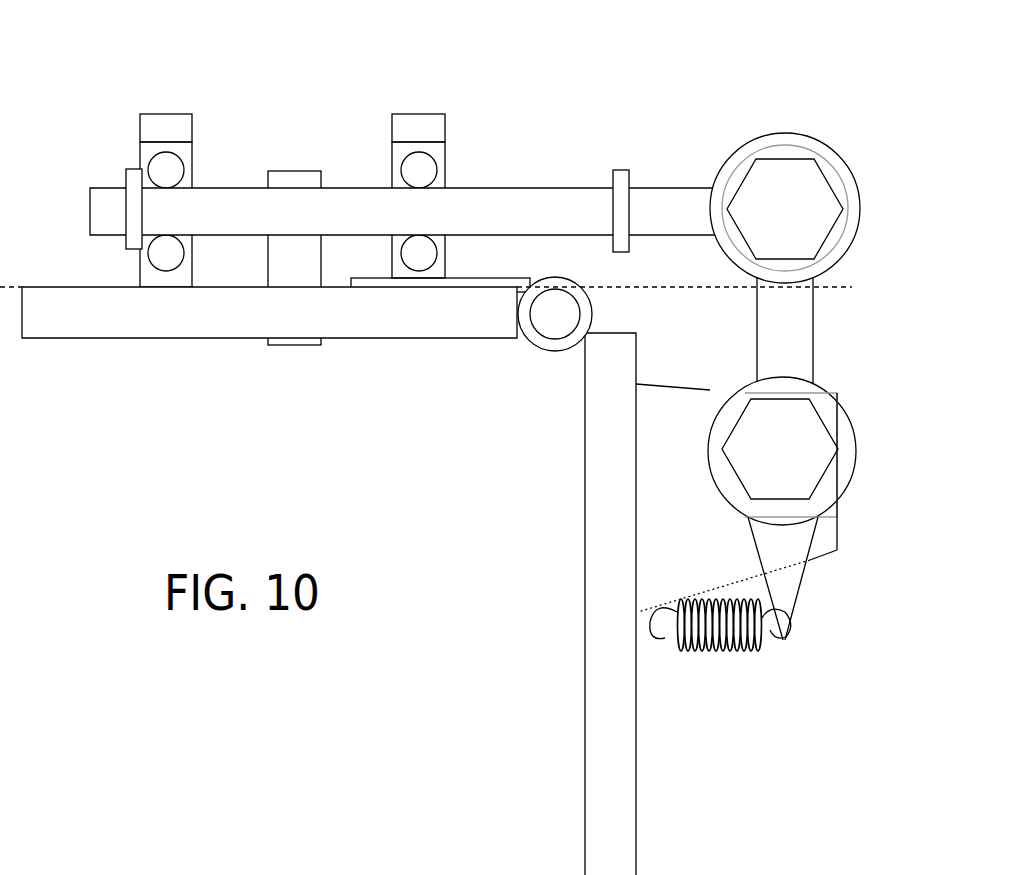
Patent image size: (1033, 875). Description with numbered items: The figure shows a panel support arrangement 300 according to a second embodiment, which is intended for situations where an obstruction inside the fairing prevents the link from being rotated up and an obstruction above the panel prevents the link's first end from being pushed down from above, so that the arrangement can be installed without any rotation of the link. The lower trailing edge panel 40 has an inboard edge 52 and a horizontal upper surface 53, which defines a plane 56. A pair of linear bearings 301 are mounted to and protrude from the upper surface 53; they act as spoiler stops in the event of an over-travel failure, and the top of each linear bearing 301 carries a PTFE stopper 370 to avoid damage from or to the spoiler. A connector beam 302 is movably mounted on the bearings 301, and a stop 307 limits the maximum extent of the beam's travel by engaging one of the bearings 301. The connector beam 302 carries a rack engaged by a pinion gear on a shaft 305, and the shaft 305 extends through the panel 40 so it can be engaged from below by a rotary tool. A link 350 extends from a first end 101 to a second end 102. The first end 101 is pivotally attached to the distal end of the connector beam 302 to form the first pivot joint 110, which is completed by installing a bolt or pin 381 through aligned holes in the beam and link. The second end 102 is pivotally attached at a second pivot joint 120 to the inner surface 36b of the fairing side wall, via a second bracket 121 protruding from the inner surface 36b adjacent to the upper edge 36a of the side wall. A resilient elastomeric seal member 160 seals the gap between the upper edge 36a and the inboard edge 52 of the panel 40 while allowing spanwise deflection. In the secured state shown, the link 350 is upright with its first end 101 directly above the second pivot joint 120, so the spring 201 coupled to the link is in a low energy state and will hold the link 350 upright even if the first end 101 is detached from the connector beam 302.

The first lower trailing edge panel 40 is at (92, 320).
The upper surface 53 is at (53, 287).
The plane 56 is at (833, 290).
The inboard edge 52 is at (518, 314).
The seal member 160 is at (541, 363).
The upper edge 36a is at (610, 333).
The inner surface 36b is at (637, 853).
The panel support arrangement 300 is at (503, 158).
The linear bearings 301 is at (193, 163).
The connector beam 302 is at (542, 202).
The shaft 305 is at (293, 345).
The stop 307 is at (132, 170).
The PTFE stopper 370 is at (167, 115).
The first end 101 is at (774, 193).
The first pivot joint 110 is at (759, 187).
The bolt or pin 381 is at (783, 182).
The link 350 is at (790, 342).
The second pivot joint 120 is at (810, 478).
The second bracket 121 is at (822, 555).
The second end 102 is at (692, 411).
The spring 201 is at (712, 648).